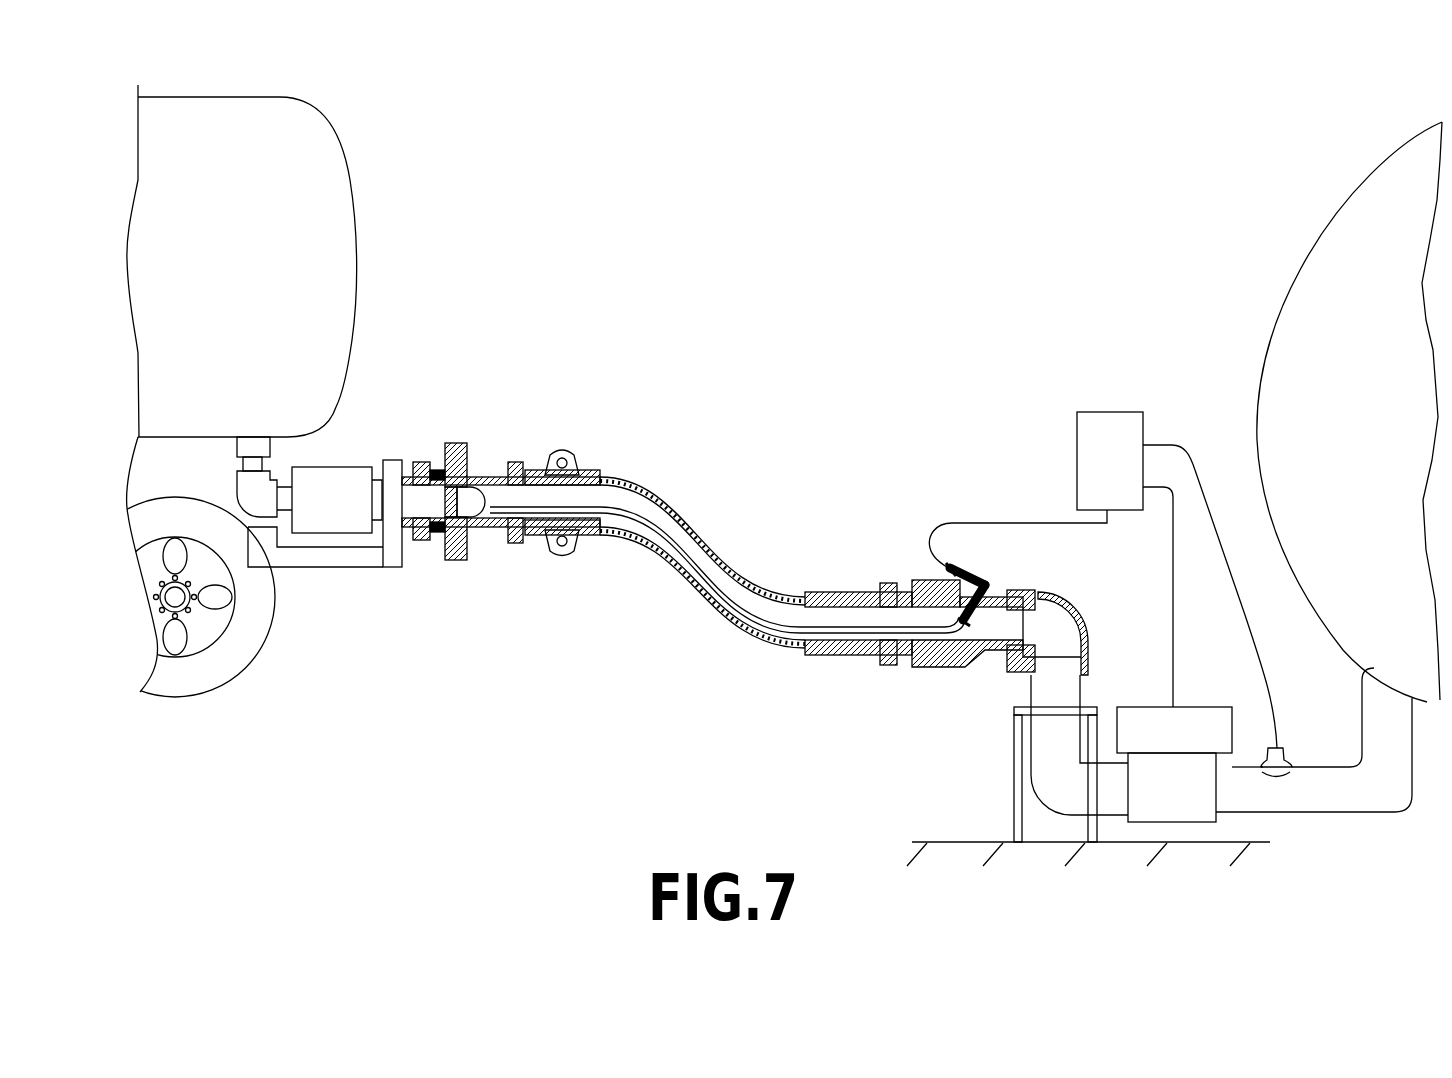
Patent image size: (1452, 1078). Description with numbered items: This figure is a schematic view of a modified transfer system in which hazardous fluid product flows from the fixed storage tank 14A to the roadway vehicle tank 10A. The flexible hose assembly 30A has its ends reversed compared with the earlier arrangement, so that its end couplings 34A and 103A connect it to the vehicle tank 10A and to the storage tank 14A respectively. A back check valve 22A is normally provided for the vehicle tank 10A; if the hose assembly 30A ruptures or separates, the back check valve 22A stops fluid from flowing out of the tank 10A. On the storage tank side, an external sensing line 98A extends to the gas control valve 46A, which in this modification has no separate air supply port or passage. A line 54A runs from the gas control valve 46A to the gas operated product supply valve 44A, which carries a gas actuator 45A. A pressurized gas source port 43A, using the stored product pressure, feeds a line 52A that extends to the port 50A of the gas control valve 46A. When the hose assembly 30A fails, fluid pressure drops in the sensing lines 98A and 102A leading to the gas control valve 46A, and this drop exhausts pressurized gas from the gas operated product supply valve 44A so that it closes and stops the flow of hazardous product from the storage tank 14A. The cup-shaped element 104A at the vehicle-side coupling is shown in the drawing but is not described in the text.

The roadway vehicle tank 10A is at (330, 275).
The storage tank 14A is at (1320, 254).
The back check valve 22A is at (320, 475).
The flexible hose assembly 30A is at (688, 490).
The end coupling 34A is at (453, 556).
The pressurized gas source port 43A is at (1282, 733).
The gas operated product supply valve 44A is at (1139, 690).
The gas actuator 45A is at (1192, 708).
The gas control valve 46A is at (1143, 422).
The port 50A is at (1143, 445).
The line 52A is at (1255, 630).
The line 54A is at (1173, 587).
The external sensing line 98A is at (1017, 522).
The sensing line 102A is at (716, 590).
The end coupling 103A is at (930, 669).
The cup 104A is at (482, 519).